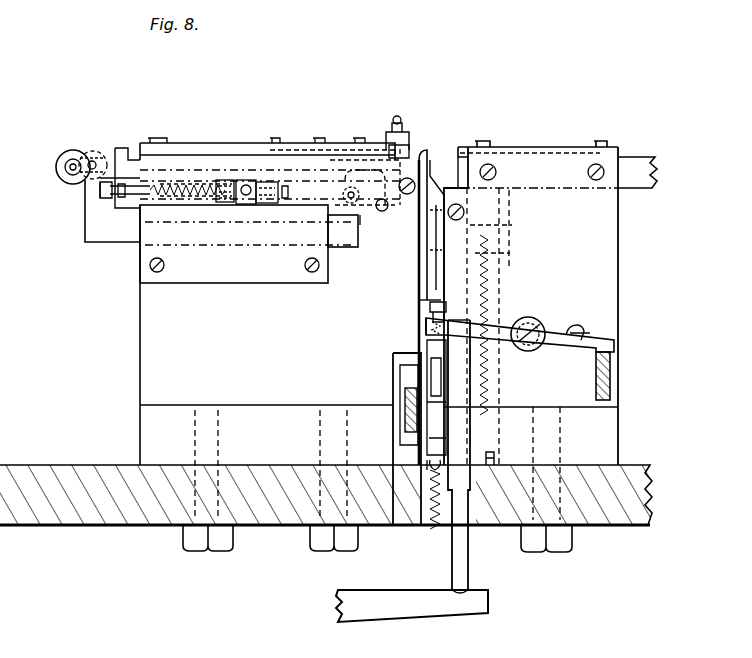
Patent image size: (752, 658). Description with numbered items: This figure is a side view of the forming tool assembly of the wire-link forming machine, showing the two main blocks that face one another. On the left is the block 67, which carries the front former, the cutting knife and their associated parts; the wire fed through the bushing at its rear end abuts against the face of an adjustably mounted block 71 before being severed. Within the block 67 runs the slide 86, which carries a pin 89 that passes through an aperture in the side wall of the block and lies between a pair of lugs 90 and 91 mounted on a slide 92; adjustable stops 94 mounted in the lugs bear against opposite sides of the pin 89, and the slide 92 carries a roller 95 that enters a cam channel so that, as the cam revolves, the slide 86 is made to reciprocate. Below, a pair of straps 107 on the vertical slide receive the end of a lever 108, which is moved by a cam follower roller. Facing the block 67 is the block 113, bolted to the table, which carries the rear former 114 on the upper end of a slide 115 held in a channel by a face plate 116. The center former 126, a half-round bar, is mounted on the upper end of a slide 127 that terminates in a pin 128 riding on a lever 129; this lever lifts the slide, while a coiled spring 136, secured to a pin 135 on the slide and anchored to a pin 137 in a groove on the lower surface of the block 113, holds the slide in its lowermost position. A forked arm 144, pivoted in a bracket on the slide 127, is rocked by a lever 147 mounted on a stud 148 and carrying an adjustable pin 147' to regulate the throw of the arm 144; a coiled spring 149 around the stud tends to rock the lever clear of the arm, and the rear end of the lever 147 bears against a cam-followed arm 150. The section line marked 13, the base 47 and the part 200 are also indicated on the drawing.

The section line 13- 13 is at (240, 91).
The base 47 is at (398, 650).
The block 67 is at (148, 348).
The block 71 is at (418, 150).
The slide 86 is at (234, 182).
The pin 89 is at (246, 182).
The lug 90 is at (267, 183).
The lug 91 is at (222, 185).
The slide 92 is at (125, 235).
The adjustable stops 94 is at (185, 310).
The roller 95 is at (85, 183).
The straps 107 is at (396, 385).
The lever 108 is at (406, 420).
The block 113 is at (600, 257).
The rear former 114 is at (462, 152).
The slide 115 is at (630, 160).
The face plate 116 is at (556, 152).
The center former 126 is at (431, 162).
The slide 127 is at (440, 190).
The pin 128 is at (462, 569).
The lever 129 is at (390, 598).
The pin 135 is at (500, 225).
The coiled spring 136 is at (497, 254).
The pin 137 is at (492, 452).
The arm 144 is at (436, 368).
The lever 147 is at (520, 308).
The adjustable pin 147' is at (455, 286).
The stud 148 is at (536, 325).
The coiled spring 149 is at (578, 328).
The arm 150 is at (612, 365).
The anvil block 200 is at (477, 638).